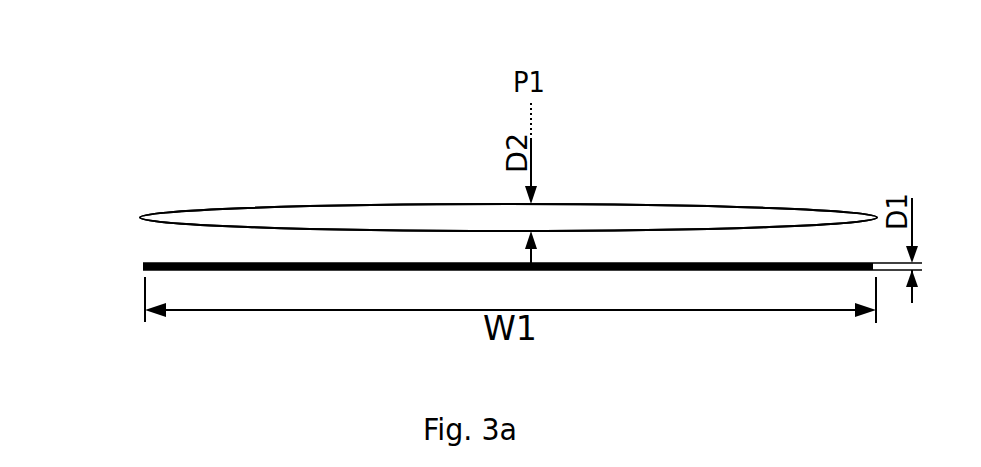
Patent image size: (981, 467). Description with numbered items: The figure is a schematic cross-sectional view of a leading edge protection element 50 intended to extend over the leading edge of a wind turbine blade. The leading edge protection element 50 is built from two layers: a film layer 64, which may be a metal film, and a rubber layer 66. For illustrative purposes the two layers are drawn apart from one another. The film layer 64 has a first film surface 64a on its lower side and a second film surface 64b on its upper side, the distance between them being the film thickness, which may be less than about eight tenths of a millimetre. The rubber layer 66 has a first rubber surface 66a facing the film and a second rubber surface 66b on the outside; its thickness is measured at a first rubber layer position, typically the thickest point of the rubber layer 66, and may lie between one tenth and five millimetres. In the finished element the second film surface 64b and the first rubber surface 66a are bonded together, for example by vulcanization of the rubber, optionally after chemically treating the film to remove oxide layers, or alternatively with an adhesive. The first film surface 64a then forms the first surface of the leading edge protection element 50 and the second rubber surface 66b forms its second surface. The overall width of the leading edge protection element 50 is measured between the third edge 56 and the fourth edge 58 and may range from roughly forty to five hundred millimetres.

The leading edge protection element 50 is at (680, 98).
The third edge 56 is at (110, 163).
The fourth edge 58 is at (855, 138).
The film layer 64 is at (201, 263).
The first film surface 64a is at (187, 271).
The second film surface 64b is at (178, 263).
The rubber layer 66 is at (320, 213).
The first rubber surface 66a is at (380, 230).
The second rubber surface 66b is at (428, 205).